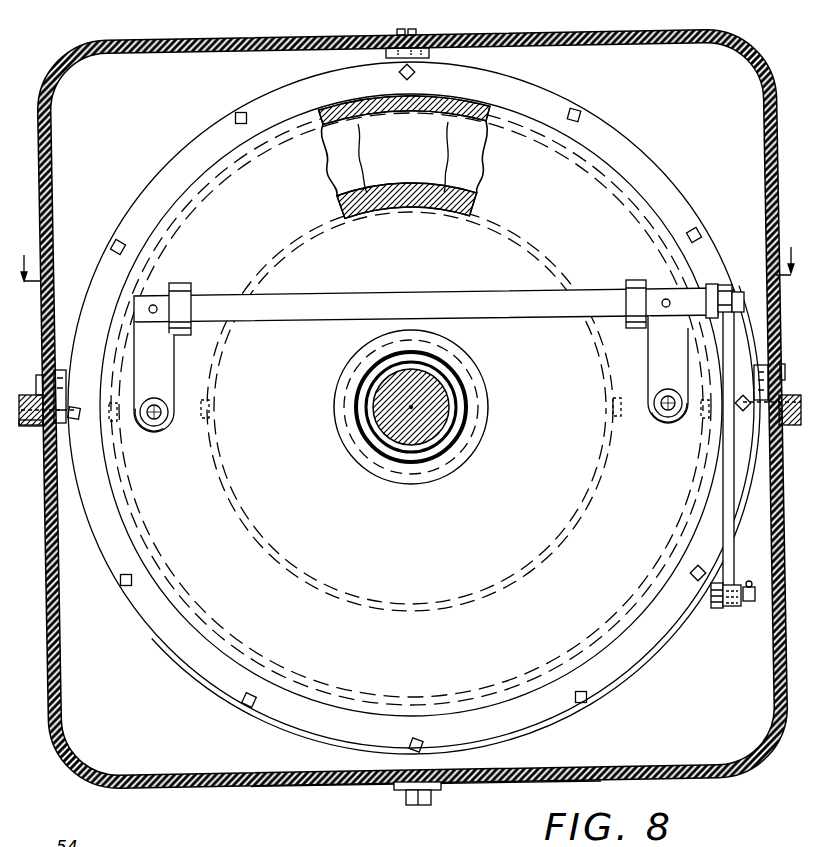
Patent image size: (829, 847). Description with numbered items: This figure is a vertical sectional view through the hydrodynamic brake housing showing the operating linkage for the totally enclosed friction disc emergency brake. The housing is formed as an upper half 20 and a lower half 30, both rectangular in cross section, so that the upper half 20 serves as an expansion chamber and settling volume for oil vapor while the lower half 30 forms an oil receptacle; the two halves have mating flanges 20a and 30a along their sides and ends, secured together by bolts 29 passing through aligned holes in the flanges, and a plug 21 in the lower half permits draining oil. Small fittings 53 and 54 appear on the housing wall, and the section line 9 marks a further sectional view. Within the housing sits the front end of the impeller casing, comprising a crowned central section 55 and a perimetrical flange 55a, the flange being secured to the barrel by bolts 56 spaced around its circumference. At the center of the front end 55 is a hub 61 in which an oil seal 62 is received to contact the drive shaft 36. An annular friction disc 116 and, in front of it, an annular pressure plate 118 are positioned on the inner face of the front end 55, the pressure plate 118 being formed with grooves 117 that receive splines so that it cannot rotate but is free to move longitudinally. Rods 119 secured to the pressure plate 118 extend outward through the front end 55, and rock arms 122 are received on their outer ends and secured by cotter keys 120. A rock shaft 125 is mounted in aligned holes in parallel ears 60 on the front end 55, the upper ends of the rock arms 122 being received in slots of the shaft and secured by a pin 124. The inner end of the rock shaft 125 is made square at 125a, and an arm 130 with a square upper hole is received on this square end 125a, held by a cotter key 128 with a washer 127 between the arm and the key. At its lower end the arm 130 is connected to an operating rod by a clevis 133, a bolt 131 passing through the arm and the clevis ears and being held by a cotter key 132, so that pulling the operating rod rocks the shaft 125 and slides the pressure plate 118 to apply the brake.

The upper half of housing 20 is at (564, 38).
The lower half of housing 30 is at (240, 786).
The mating flange 20a is at (25, 394).
The mating flange 30a is at (25, 427).
The bolts 29 is at (788, 392).
The plug 21 is at (410, 792).
The fastener 53 is at (395, 29).
The mounting plate 54 is at (430, 48).
The crowned central section of front end 55 is at (421, 240).
The perimetrical flange 55a is at (198, 131).
The bolts 56 is at (247, 118).
The annular friction disc 116 is at (420, 149).
The annular pressure plate 118 is at (340, 152).
The hub 61 is at (352, 360).
The oil seal 62 is at (358, 417).
The drive shaft 36 is at (436, 407).
The rock shaft 125 is at (432, 302).
The square end of rock shaft 125a is at (705, 284).
The parallel ears 60 is at (186, 278).
The rock arms 122 is at (140, 351).
The pin 124 is at (155, 312).
The rods 119 is at (153, 405).
The cotter keys 120 is at (158, 428).
The grooves 117 is at (108, 420).
The arm 130 is at (720, 468).
The washer 127 is at (730, 284).
The cotter key 128 is at (744, 291).
The bolt 131 is at (710, 593).
The cotter key 132 is at (750, 607).
The clevis 133 is at (715, 613).
The section line 9- 9 is at (406, 252).